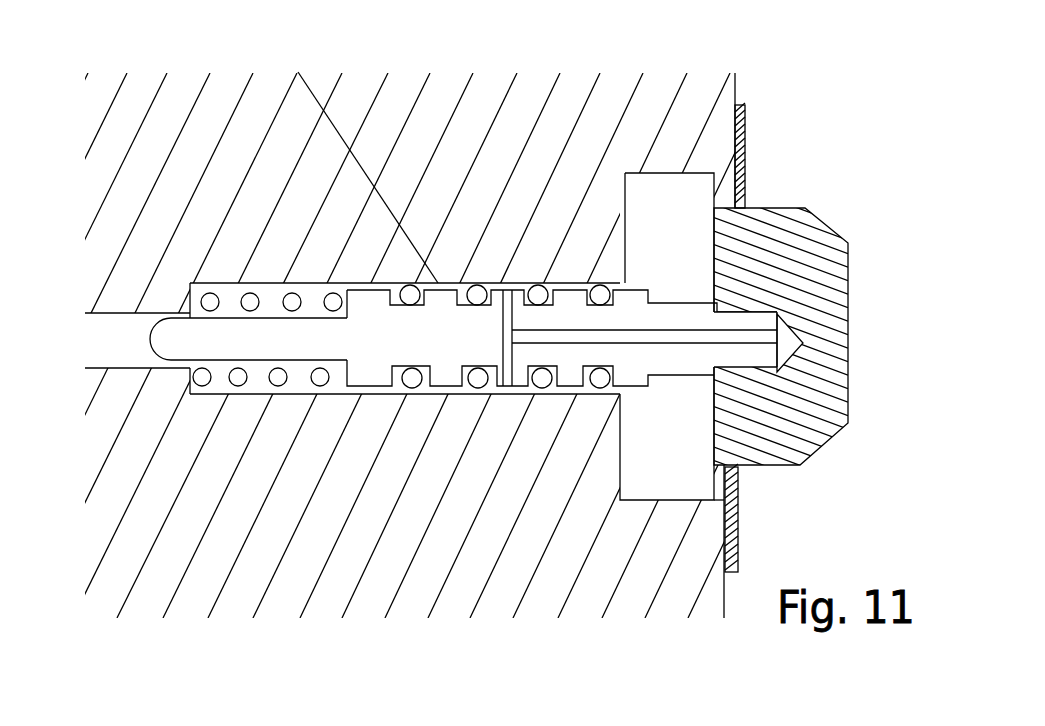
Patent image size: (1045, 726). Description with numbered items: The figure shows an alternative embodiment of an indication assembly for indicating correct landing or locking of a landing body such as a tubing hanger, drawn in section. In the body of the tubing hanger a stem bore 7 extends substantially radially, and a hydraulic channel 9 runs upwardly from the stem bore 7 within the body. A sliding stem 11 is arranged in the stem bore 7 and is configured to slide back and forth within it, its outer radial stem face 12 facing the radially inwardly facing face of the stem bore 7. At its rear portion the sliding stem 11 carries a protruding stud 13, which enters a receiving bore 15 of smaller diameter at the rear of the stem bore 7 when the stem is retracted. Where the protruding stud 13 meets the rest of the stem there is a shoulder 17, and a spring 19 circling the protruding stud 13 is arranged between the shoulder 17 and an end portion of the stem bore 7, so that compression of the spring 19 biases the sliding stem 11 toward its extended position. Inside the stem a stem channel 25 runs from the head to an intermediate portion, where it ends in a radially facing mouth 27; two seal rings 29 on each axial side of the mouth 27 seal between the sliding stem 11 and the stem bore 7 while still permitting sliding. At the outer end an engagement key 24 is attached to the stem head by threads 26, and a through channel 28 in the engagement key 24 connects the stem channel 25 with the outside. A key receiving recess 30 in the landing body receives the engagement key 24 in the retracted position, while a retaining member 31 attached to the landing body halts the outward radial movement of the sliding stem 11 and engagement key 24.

The stem bore 7 is at (316, 286).
The hydraulic channel 9 is at (340, 122).
The sliding stem 11 is at (409, 352).
The outer radial stem face 12 is at (371, 387).
The protruding stud 13 is at (276, 354).
The receiving bore 15 is at (114, 354).
The shoulder 17 is at (329, 390).
The spring 19 is at (279, 388).
The engagement key 24 is at (813, 252).
The stem channel 25 is at (568, 337).
The threads 26 is at (750, 373).
The mouth 27 is at (504, 388).
The through channel 28 is at (840, 341).
The seal rings 29 is at (538, 288).
The key receiving recess 30 is at (672, 427).
The retaining member 31 is at (737, 152).